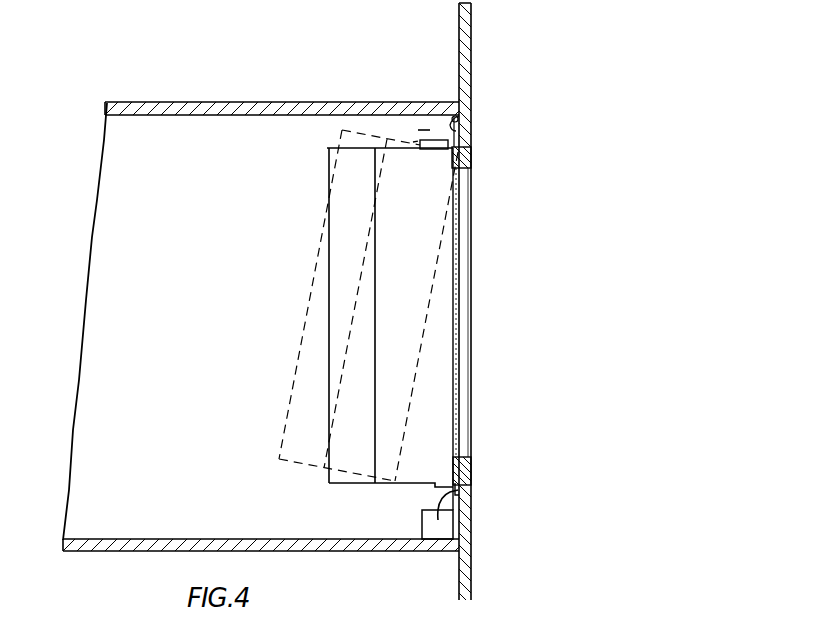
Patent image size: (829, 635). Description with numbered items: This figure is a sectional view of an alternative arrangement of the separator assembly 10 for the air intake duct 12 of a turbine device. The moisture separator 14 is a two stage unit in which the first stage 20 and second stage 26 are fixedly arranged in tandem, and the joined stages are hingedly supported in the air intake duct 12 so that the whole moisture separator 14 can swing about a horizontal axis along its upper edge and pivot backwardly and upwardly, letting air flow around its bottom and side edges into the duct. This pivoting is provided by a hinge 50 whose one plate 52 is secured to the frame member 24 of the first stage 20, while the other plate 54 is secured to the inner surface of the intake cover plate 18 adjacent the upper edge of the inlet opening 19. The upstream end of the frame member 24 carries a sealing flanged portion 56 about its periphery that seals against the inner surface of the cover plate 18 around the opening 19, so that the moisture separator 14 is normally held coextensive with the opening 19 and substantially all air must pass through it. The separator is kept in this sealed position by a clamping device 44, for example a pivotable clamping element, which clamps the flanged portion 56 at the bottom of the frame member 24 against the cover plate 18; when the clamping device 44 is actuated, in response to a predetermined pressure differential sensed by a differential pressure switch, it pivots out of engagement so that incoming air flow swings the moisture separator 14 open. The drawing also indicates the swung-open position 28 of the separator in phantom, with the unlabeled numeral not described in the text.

The separator assembly 10 is at (494, 259).
The air intake duct 12 is at (289, 104).
The moisture separator 14 is at (465, 218).
The intake cover plate 18 is at (471, 60).
The inlet opening 19 is at (468, 167).
The first stage 20 is at (430, 422).
The first stage frame member 24 is at (445, 317).
The second stage 26 is at (350, 472).
The panel in closed position 28 is at (333, 316).
The clamping device 44 is at (427, 527).
The hinge 50 is at (423, 127).
The hinge plate 52 is at (433, 142).
The hinge plate 54 is at (459, 116).
The sealing flanged portion 56 is at (466, 457).